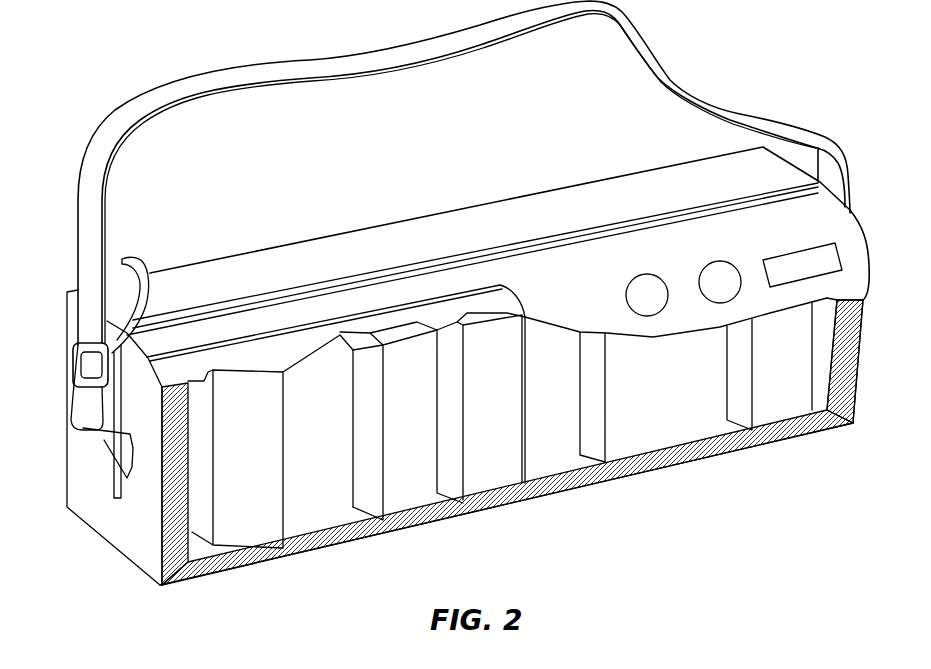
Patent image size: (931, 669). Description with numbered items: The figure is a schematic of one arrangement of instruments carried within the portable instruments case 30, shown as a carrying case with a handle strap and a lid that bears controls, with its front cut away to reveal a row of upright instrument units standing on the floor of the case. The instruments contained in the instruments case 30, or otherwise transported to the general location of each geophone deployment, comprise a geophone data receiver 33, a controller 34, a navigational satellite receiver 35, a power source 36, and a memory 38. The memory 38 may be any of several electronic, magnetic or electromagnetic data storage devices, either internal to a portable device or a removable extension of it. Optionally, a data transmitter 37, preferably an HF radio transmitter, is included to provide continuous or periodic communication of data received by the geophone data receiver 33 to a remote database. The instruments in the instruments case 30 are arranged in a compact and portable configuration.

The portable instruments case 30 is at (122, 59).
The geophone data receiver 33 is at (787, 437).
The controller 34 is at (280, 547).
The navigational satellite receiver 35 is at (670, 453).
The power source 36 is at (410, 518).
The data transmitter 37 is at (497, 508).
The memory 38 is at (557, 490).